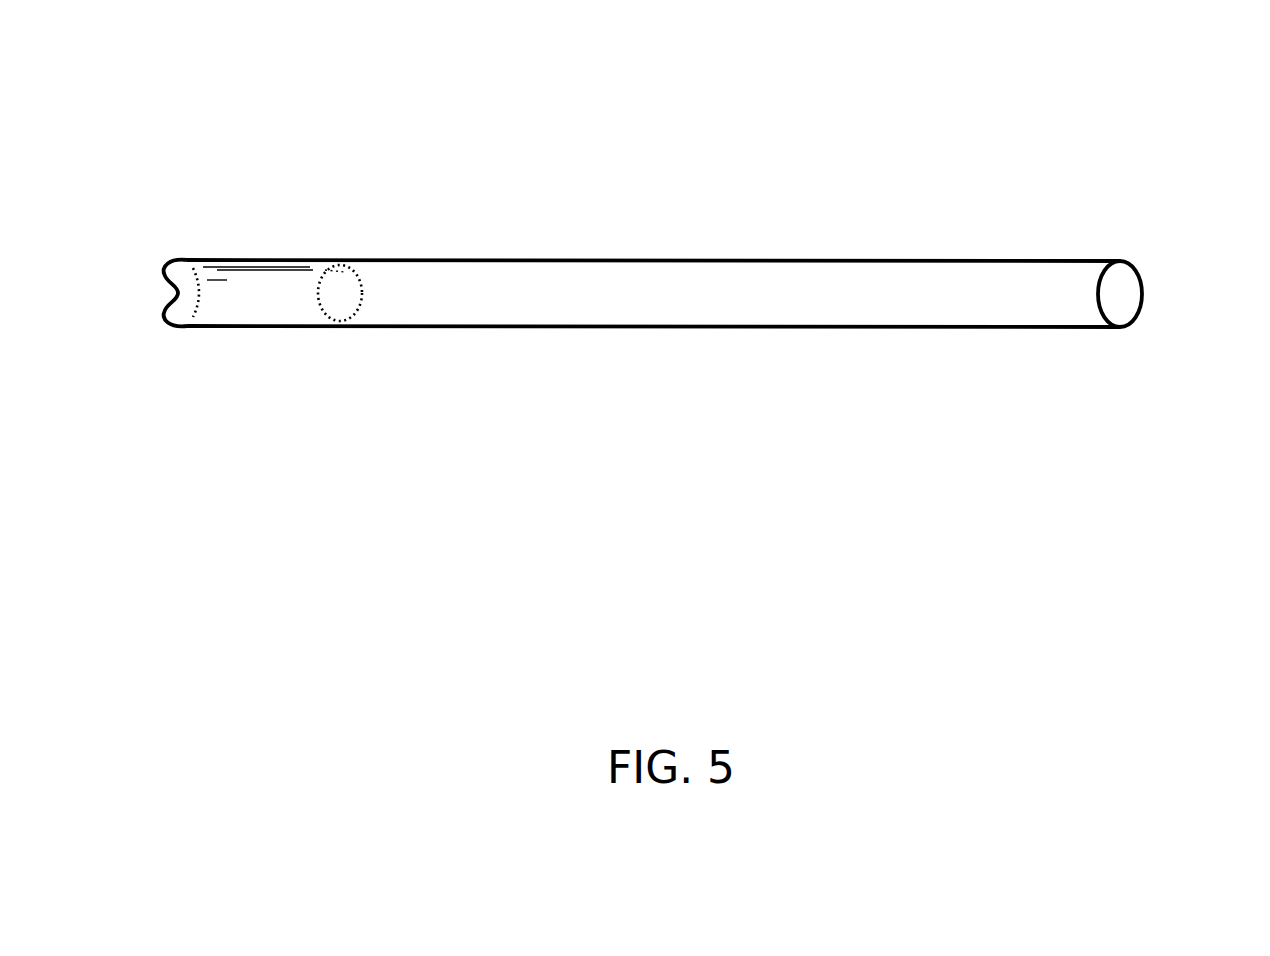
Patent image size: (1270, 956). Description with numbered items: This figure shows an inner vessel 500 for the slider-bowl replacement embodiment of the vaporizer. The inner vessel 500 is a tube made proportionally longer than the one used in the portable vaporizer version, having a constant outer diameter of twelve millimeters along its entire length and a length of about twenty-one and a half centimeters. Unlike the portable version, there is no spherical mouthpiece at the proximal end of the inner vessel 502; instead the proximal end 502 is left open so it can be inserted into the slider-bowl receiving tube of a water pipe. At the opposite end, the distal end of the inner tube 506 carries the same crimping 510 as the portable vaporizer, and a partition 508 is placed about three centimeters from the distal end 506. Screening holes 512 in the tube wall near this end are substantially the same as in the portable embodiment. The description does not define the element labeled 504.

The inner vessel 500 is at (848, 354).
The proximal end of the inner vessel 502 is at (1105, 328).
The tube wall / lumen 504 is at (270, 297).
The distal end of the inner tube 506 is at (168, 323).
The partition 508 is at (345, 323).
The crimping 510 is at (187, 290).
The screening holes 512 is at (332, 273).